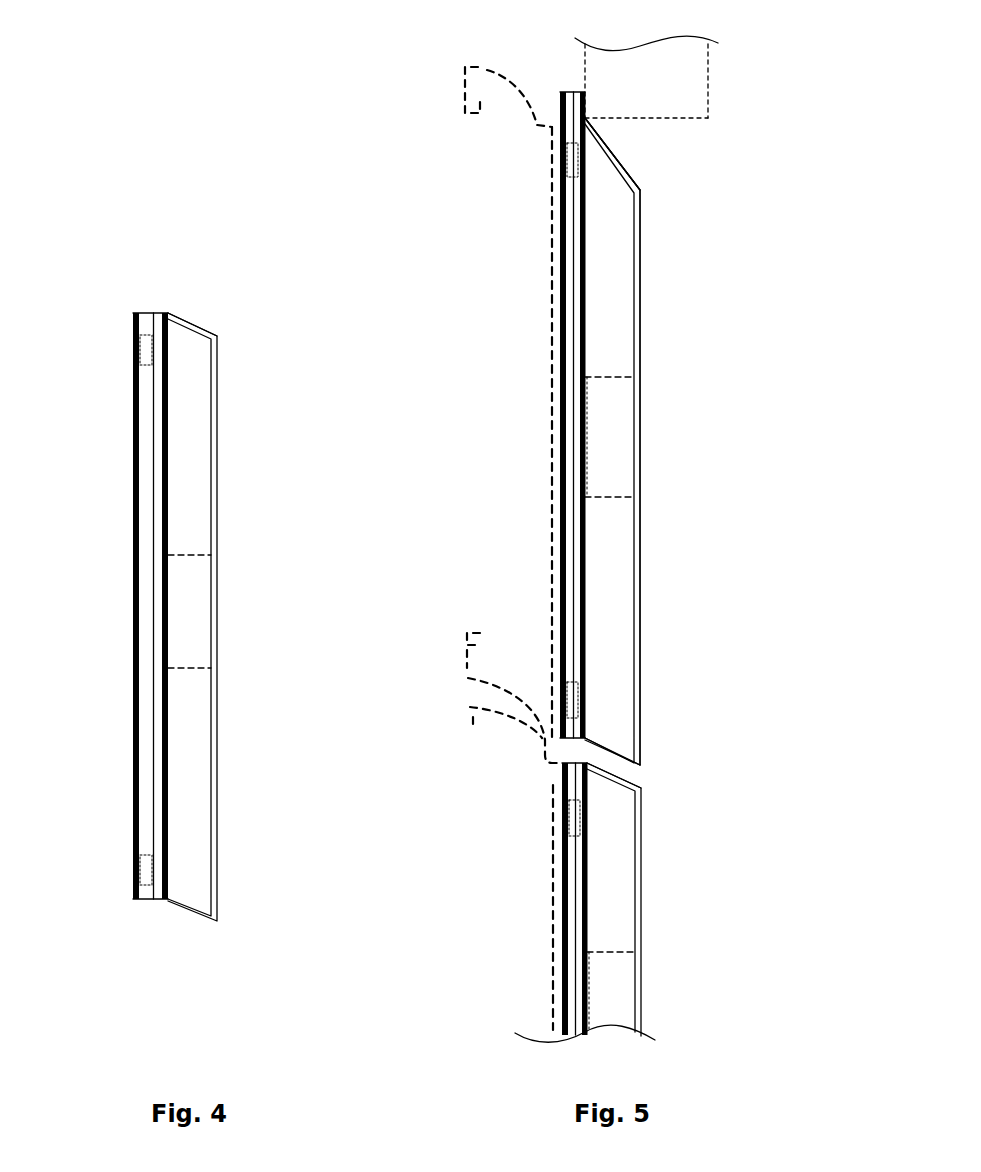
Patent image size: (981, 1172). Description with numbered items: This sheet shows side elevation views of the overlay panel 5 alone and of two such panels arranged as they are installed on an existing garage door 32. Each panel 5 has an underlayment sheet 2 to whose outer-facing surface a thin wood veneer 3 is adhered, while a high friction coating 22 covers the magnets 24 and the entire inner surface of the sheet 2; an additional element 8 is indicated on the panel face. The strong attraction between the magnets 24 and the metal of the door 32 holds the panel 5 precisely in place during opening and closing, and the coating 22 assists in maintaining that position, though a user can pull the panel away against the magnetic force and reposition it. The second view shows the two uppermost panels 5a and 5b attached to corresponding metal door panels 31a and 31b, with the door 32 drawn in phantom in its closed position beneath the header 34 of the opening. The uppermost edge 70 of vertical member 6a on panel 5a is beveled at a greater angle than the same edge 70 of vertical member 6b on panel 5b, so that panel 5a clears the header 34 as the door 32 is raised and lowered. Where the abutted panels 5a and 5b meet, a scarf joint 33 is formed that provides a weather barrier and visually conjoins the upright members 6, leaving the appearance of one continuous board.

In FIG. 4, the underlayment sheet 2 is at (142, 493).
In FIG. 4, the wood veneer 3 is at (158, 417).
In FIG. 4, the overlay panel 5 is at (198, 583).
In FIG. 5, the uppermost panel 5a is at (639, 428).
In FIG. 5, the lower adjacent panel 5b is at (620, 891).
In FIG. 4, the vertical member 6 is at (192, 482).
In FIG. 5, the vertical member 6 is at (615, 553).
In FIG. 5, the vertical member of uppermost panel 6a is at (615, 272).
In FIG. 5, the vertical member of lower panel 6b is at (607, 853).
In FIG. 4, the fitting 8 is at (197, 651).
In FIG. 4, the high friction coating 22 is at (135, 762).
In FIG. 4, the magnets 24 is at (140, 350).
In FIG. 5, the upper metal door panel 31a is at (550, 345).
In FIG. 5, the lower metal door panel 31b is at (551, 811).
In FIG. 5, the garage door 32 is at (465, 95).
In FIG. 5, the scarf joint 33 is at (648, 766).
In FIG. 5, the header 34 is at (680, 103).
In FIG. 4, the uppermost edge 70 is at (187, 320).
In FIG. 5, the uppermost edge 70 is at (617, 160).